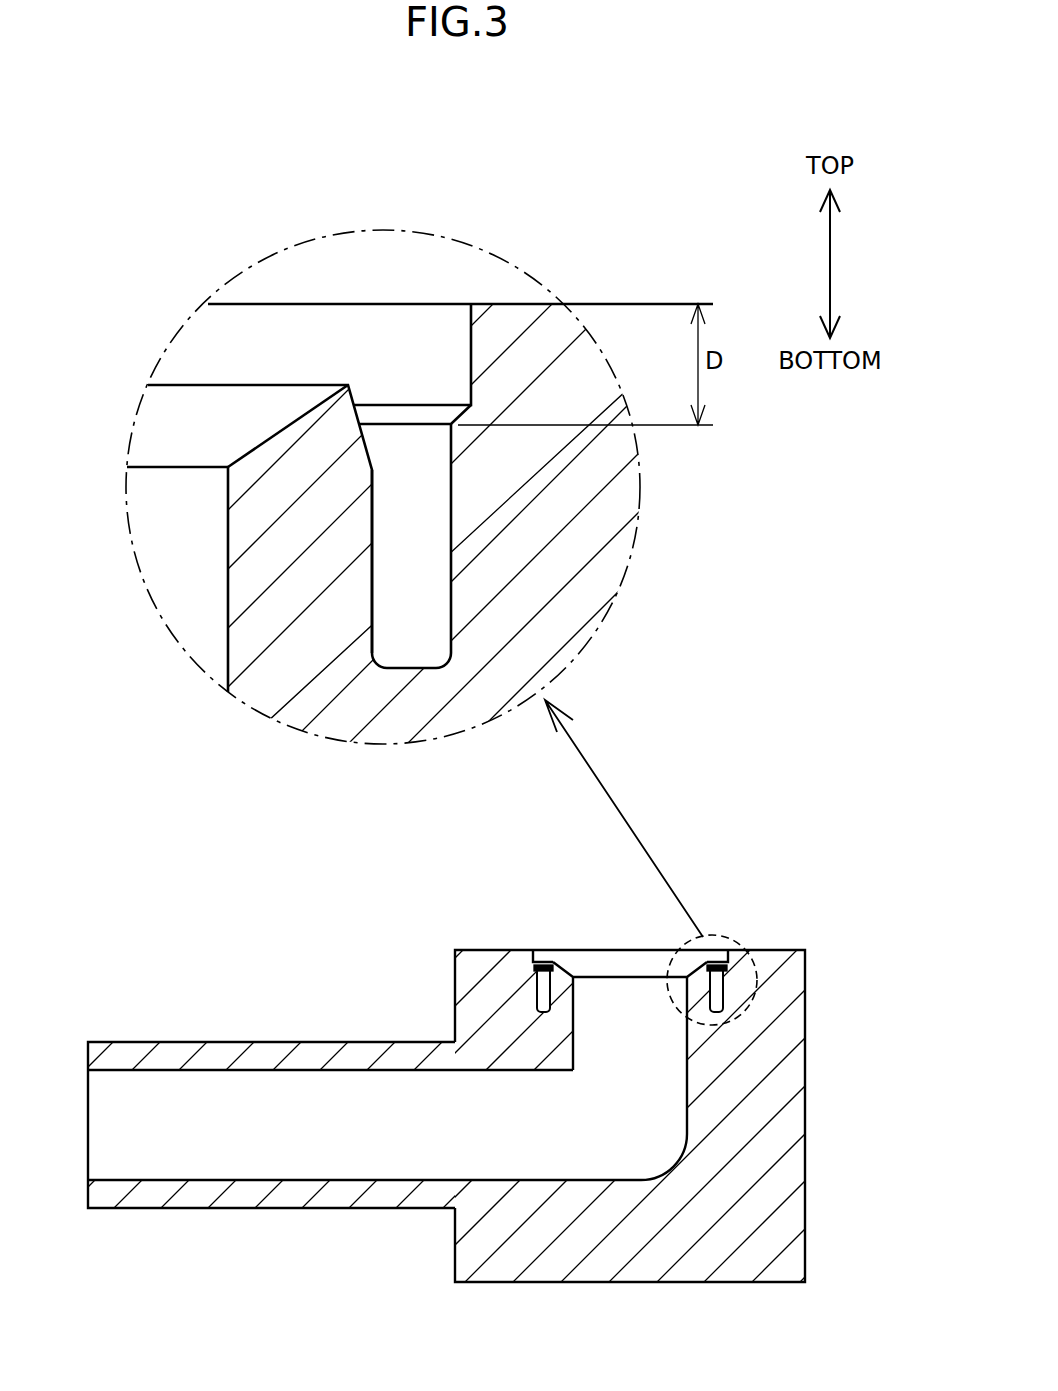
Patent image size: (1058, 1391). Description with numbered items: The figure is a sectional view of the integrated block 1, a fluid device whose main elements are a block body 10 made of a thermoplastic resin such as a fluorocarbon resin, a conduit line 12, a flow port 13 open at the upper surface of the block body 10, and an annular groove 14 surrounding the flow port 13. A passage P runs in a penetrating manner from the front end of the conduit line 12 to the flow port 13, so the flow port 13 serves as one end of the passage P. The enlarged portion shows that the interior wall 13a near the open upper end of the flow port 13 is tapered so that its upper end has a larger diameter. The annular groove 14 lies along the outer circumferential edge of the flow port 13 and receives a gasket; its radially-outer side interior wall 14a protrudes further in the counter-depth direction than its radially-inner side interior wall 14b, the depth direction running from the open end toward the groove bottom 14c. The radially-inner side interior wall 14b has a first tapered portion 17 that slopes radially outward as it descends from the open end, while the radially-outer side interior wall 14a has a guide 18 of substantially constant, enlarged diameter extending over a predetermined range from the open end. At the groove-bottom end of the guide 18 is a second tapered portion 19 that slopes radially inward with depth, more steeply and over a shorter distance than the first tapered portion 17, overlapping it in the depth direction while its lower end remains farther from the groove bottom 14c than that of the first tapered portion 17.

The integrated block 1 is at (529, 1030).
The block body 10 is at (593, 1285).
The conduit line 12 is at (233, 1210).
The flow port 13 is at (228, 535).
The interior wall 13a is at (262, 431).
The annular groove 14 is at (728, 952).
The radially-outer side interior wall 14a is at (450, 551).
The radially-inner side interior wall 14b is at (373, 562).
The groove bottom 14c is at (403, 667).
The first tapered portion 17 is at (356, 400).
The guide 18 is at (471, 352).
The second tapered portion 19 is at (462, 416).
The passage P is at (225, 1123).